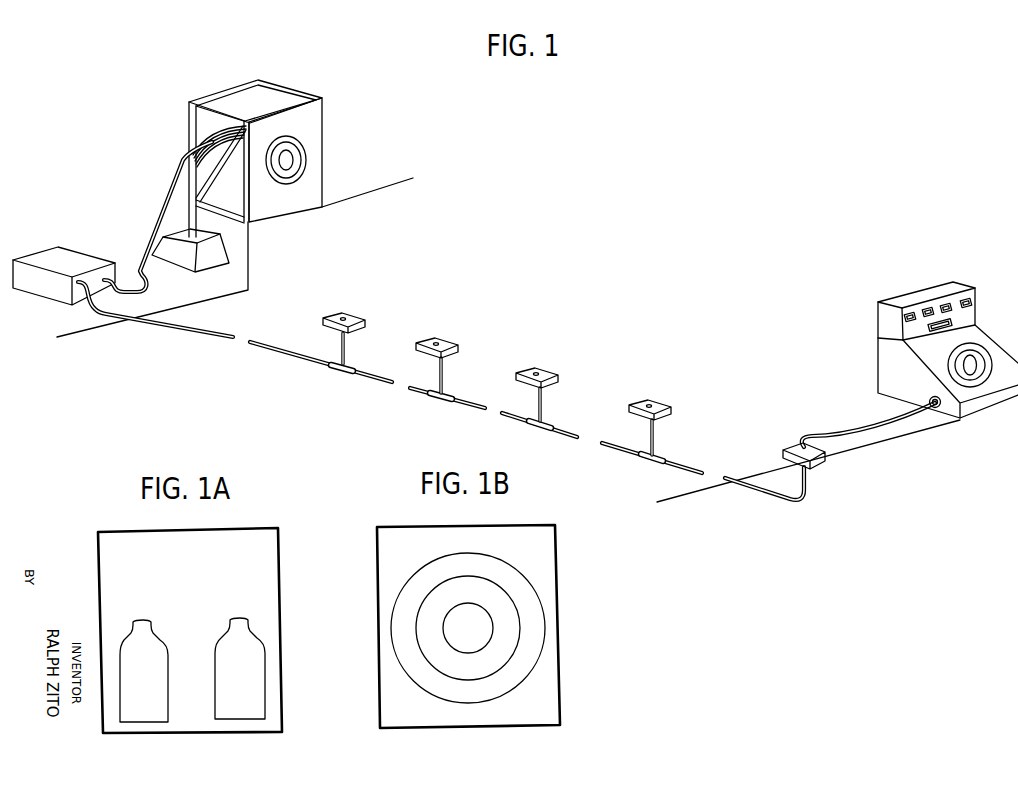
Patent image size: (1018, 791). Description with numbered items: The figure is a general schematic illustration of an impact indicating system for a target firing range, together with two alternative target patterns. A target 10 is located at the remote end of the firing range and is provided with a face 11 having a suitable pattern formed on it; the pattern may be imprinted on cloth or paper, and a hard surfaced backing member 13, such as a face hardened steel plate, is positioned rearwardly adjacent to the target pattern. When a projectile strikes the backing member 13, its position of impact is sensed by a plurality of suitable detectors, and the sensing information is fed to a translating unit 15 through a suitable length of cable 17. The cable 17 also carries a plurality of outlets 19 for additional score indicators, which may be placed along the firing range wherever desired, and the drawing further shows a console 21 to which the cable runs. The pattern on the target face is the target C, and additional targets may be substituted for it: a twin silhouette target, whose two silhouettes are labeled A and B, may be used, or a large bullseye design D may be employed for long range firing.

In FIG. 1, the target 10 is at (328, 105).
In FIG. 1, the face 11 is at (310, 190).
In FIG. 1, the target C is at (305, 157).
In FIG. 1, the backing member 13 is at (239, 170).
In FIG. 1, the translating unit 15 is at (65, 260).
In FIG. 1, the cable 17 is at (158, 214).
In FIG. 1, the outlets 19 is at (353, 317).
In FIG. 1, the control console 21 is at (893, 372).
In FIG. 1A, the bottle A is at (133, 723).
In FIG. 1A, the bottle B is at (242, 720).
In FIG. 1B, the target disk D is at (402, 667).